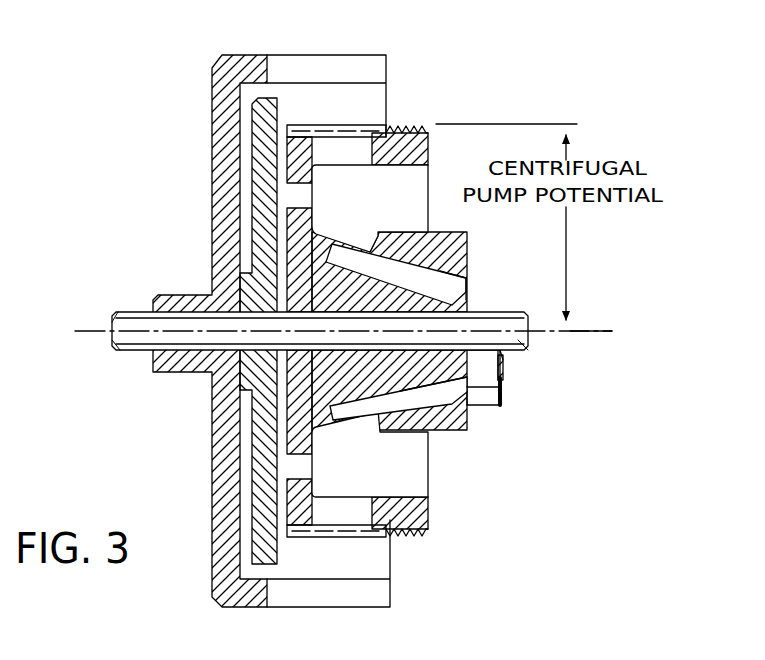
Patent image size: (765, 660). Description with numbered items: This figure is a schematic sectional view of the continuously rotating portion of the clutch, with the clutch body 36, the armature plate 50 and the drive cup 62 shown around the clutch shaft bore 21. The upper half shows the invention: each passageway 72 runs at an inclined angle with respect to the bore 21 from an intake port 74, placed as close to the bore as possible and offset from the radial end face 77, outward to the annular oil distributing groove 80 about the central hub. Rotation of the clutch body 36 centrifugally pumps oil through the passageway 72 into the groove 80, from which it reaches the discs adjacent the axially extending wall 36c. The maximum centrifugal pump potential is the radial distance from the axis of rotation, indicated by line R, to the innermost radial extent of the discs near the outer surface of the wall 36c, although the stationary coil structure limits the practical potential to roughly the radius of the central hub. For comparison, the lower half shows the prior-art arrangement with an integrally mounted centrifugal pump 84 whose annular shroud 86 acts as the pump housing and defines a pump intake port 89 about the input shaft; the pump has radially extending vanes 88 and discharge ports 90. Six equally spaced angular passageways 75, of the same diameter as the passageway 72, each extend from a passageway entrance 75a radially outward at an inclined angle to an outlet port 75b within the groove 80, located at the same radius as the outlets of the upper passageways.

The clutch shaft bore 21 is at (408, 305).
The clutch body 36 is at (338, 305).
The axially extending wall 36c is at (417, 150).
The armature plate 50 is at (262, 250).
The drive cup 62 is at (214, 272).
The passageway 72 is at (410, 282).
The intake port 74 is at (455, 281).
The angular passageway 75 is at (418, 402).
The passageway entrance 75a is at (440, 375).
The outlet port 75b is at (366, 412).
The radial end face 77 is at (467, 294).
The oil distributing groove 80 is at (374, 238).
The centrifugal pump 84 is at (512, 385).
The annular shroud 86 is at (503, 400).
The radially extending vanes 88 is at (505, 375).
The pump intake port 89 is at (505, 362).
The discharge ports 90 is at (478, 392).
The axis of rotation line R is at (595, 330).